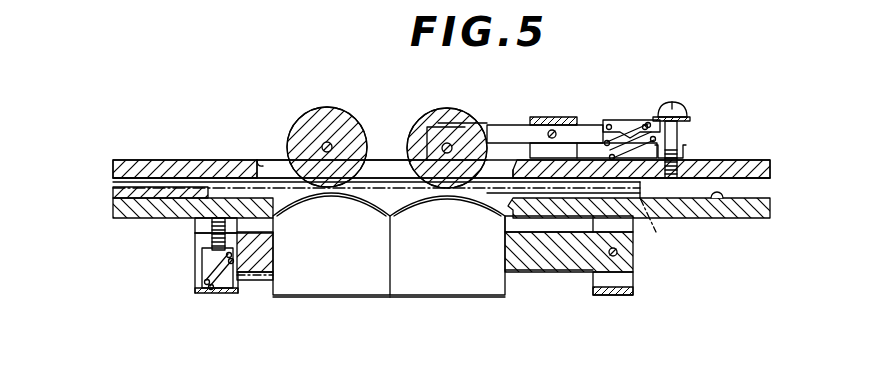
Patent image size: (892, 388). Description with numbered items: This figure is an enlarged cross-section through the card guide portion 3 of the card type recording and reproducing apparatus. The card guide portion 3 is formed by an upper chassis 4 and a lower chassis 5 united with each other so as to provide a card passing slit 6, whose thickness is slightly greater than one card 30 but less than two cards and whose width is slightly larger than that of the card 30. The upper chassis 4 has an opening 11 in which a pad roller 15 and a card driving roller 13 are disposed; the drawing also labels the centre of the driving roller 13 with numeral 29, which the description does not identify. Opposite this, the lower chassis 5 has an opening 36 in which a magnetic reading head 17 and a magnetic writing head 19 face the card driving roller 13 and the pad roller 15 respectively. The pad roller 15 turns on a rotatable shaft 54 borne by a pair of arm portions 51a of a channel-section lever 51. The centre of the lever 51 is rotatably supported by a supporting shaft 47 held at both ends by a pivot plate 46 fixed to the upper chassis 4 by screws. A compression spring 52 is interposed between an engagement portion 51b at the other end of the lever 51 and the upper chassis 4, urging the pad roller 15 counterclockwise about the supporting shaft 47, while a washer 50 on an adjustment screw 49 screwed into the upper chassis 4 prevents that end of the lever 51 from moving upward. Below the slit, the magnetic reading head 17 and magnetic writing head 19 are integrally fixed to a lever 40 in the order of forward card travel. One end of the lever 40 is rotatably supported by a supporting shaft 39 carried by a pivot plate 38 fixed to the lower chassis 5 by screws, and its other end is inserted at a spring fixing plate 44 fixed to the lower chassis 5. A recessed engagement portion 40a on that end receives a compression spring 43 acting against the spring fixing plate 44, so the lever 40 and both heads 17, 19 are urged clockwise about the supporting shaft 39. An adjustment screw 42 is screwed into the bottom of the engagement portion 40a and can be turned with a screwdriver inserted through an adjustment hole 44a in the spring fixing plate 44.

The card guide portion 3 is at (217, 155).
The upper chassis 4 is at (170, 166).
The lower chassis 5 is at (140, 220).
The card passing slit 6 is at (723, 212).
The opening 11 is at (262, 160).
The card driving roller 13 is at (345, 120).
The pad roller 15 is at (418, 133).
The magnetic reading head 17 is at (362, 275).
The magnetic writing head 19 is at (452, 275).
The roller shaft 29 is at (322, 145).
The card 30 is at (130, 187).
The opening 36 is at (515, 250).
The pivot plate 38 is at (612, 296).
The supporting shaft 39 is at (620, 254).
The lever 40 is at (263, 274).
The engagement portion 40a is at (228, 293).
The adjustment screw 42 is at (205, 240).
The compression spring 43 is at (202, 275).
The spring fixing plate 44 is at (198, 293).
The adjustment hole 44a is at (215, 293).
The pivot plate 46 is at (560, 117).
The supporting shaft 47 is at (550, 130).
The adjustment screw 49 is at (675, 104).
The washer 50 is at (690, 118).
The lever 51 is at (592, 132).
The arm portions 51a is at (508, 125).
The engagement portion 51b is at (628, 120).
The compression spring 52 is at (656, 135).
The rotatable shaft 54 is at (447, 142).